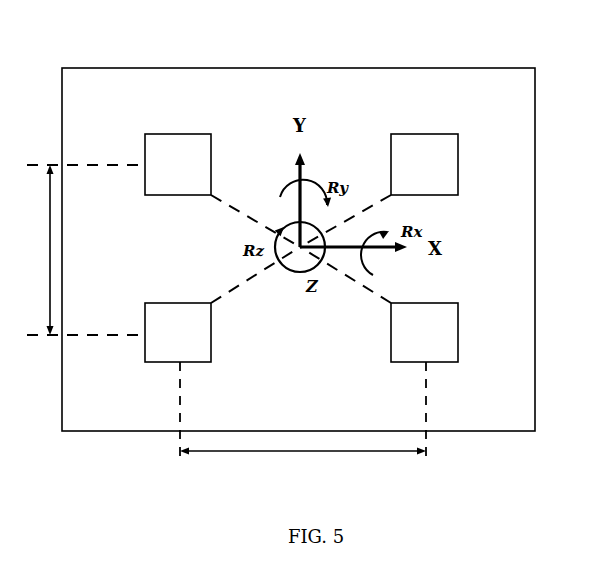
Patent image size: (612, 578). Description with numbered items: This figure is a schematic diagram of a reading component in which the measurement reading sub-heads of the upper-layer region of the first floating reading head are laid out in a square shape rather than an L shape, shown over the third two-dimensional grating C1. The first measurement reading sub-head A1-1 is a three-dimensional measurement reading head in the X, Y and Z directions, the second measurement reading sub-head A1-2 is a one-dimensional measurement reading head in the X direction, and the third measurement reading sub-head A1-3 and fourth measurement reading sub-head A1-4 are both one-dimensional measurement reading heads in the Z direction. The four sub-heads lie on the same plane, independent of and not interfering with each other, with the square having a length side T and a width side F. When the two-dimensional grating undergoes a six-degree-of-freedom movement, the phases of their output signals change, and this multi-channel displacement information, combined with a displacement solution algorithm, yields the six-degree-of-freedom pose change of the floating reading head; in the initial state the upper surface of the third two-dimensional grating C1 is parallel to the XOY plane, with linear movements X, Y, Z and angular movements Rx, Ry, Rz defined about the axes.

The third two-dimensional grating C1 is at (298, 249).
The first measurement reading sub-head A1-1 is at (178, 133).
The second measurement reading sub-head A1-2 is at (426, 134).
The third measurement reading sub-head A1-3 is at (165, 362).
The fourth measurement reading sub-head A1-4 is at (458, 362).
The width side F is at (81, 250).
The length side T is at (303, 426).